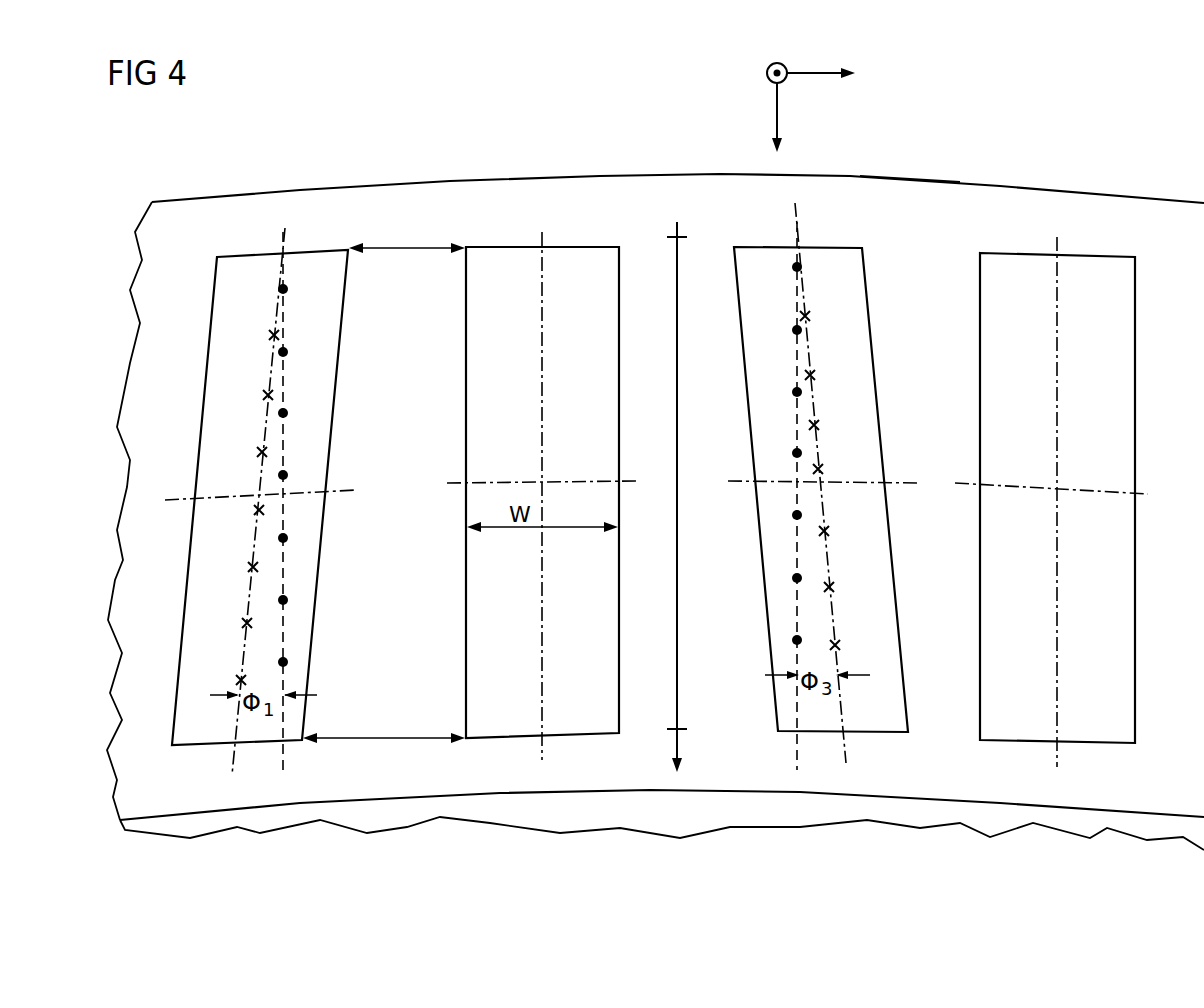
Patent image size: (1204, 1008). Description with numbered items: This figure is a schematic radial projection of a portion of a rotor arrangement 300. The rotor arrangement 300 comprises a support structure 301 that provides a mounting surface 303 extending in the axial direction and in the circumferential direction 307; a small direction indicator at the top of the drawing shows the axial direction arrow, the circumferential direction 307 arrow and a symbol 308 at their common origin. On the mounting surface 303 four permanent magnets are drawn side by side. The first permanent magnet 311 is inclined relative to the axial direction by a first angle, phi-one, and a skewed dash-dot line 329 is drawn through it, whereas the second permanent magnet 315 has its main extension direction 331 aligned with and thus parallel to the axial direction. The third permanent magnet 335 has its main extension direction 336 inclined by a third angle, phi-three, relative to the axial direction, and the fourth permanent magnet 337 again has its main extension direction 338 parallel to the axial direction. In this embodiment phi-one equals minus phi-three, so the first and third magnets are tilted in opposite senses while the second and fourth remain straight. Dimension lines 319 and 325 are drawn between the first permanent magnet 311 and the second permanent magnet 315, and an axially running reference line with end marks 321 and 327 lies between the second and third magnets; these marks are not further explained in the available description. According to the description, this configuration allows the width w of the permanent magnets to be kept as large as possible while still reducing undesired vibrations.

The rotor arrangement 300 is at (352, 145).
The support structure 301 is at (996, 195).
The mounting surface 303 is at (913, 192).
The circumferential direction 307 is at (815, 73).
The radial direction 308 is at (765, 73).
The first permanent magnet 311 is at (332, 357).
The second permanent magnet 315 is at (470, 313).
The gap between first and second magnet 319 is at (398, 248).
The reference axis 321 is at (680, 238).
The lower gap 325 is at (383, 737).
The reference axis lower end 327 is at (680, 728).
The skewed axis of first magnet 329 is at (232, 768).
The main extension direction 331 is at (542, 752).
The third permanent magnet 335 is at (860, 328).
The main extension direction 336 is at (845, 748).
The fourth permanent magnet 337 is at (1123, 362).
The main extension direction 338 is at (1058, 755).